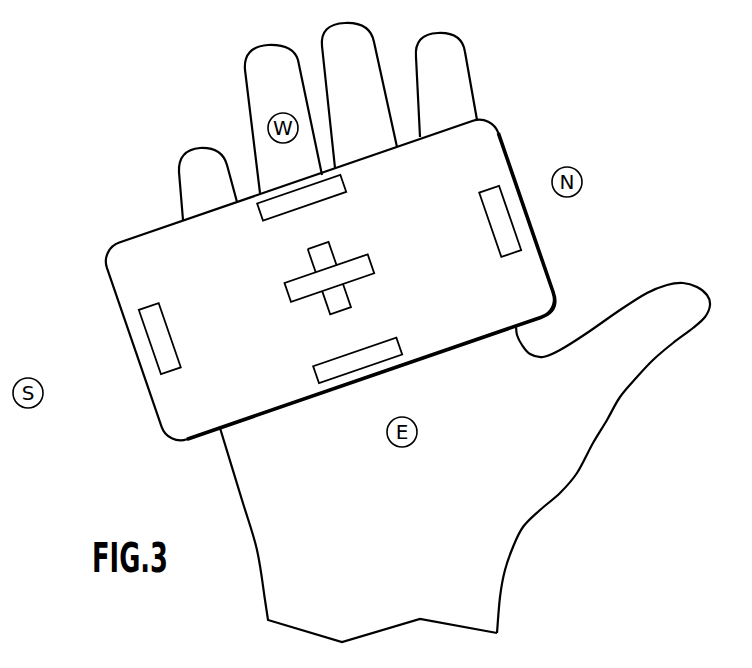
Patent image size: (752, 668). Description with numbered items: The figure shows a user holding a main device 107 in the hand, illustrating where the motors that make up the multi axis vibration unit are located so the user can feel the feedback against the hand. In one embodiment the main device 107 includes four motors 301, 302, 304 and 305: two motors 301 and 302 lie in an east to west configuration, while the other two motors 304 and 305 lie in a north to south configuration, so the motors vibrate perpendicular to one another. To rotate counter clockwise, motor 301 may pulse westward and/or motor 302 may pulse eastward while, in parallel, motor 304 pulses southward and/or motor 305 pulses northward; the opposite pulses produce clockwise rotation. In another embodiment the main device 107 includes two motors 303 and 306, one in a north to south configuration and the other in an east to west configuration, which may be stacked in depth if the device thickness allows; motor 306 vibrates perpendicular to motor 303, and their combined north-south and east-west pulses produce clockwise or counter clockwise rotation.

The main device 107 is at (555, 292).
The motor 301 is at (522, 235).
The motor 302 is at (151, 363).
The motor 303 is at (378, 267).
The motor 304 is at (256, 224).
The motor 305 is at (310, 376).
The motor 306 is at (336, 251).